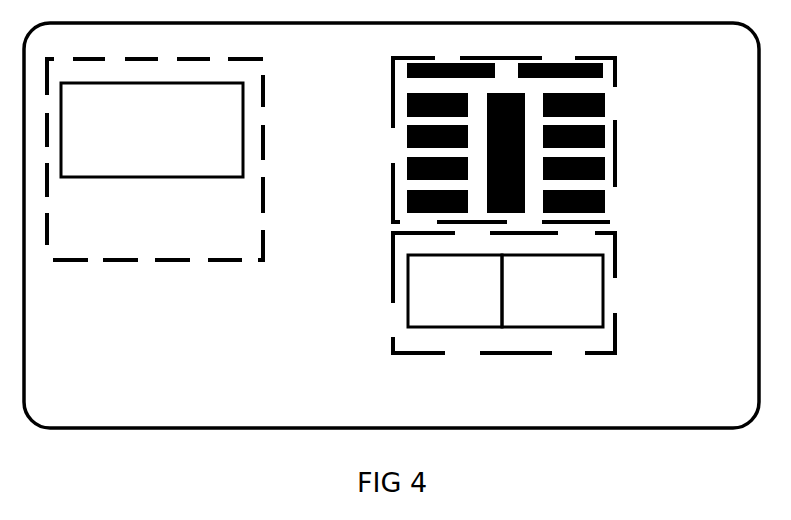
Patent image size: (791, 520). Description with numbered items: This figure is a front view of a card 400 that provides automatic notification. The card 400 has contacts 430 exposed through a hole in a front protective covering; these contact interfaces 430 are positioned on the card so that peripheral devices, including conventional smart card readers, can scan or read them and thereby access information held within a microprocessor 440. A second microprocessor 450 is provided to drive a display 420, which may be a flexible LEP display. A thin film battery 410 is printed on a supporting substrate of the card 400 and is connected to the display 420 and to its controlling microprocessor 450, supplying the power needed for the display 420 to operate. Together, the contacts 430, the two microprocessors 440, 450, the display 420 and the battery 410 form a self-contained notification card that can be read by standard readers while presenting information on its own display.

The card 400 is at (391, 225).
The thin film battery 410 is at (155, 159).
The display 420 is at (152, 131).
The contacts 430 is at (615, 120).
The microprocessor 440 is at (459, 315).
The second microprocessor 450 is at (577, 278).